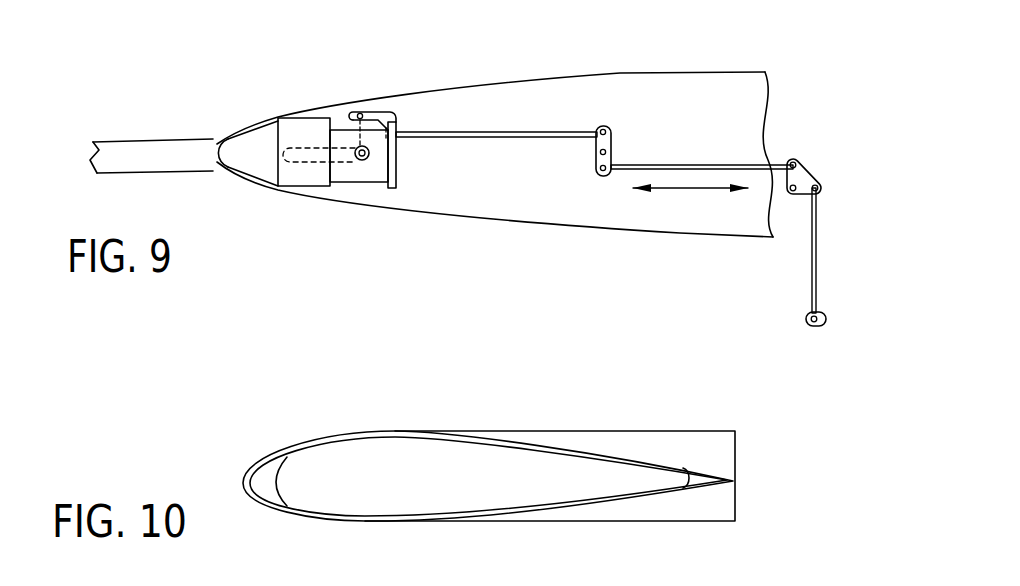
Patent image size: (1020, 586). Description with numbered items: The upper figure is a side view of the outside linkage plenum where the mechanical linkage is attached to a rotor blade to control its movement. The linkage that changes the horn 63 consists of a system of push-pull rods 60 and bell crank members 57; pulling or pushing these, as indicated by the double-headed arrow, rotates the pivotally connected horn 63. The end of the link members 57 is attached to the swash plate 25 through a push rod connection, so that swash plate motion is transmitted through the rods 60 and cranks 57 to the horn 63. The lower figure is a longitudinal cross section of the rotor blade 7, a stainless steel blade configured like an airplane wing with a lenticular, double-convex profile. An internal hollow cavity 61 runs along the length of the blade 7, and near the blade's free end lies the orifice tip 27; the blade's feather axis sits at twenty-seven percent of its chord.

In FIG. 10, the rotor blade 7 is at (547, 442).
In FIG. 9, the swash plate 25 is at (812, 317).
In FIG. 10, the orifice tip 27 is at (697, 478).
In FIG. 9, the bell crank members 57 is at (597, 171).
In FIG. 9, the push-pull rods 60 is at (627, 167).
In FIG. 10, the internal hollow cavity 61 is at (550, 487).
In FIG. 9, the horn 63 is at (318, 157).